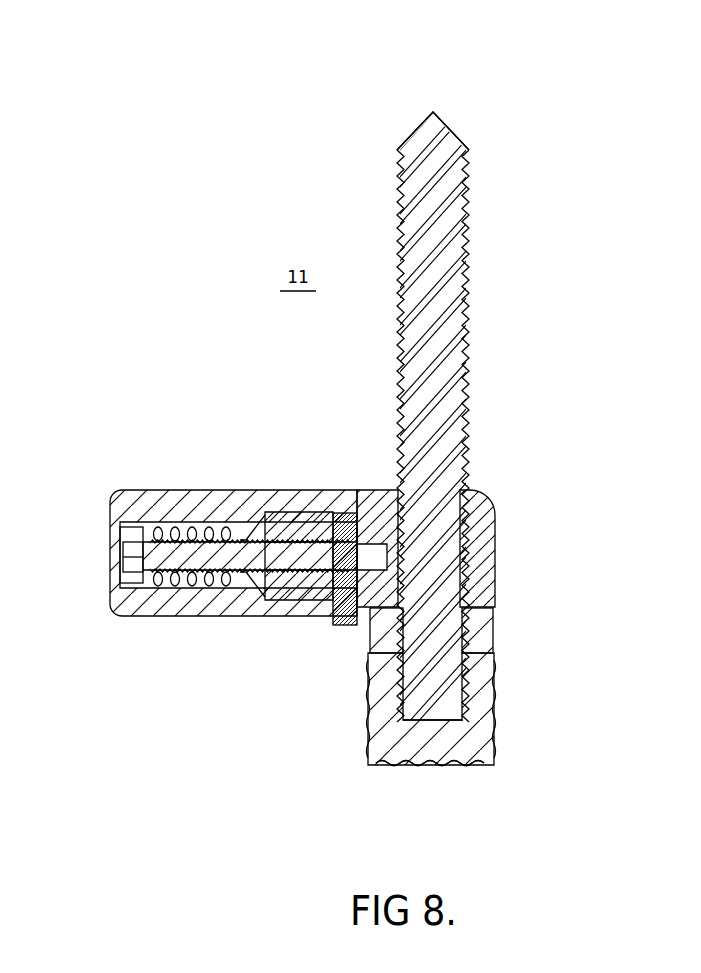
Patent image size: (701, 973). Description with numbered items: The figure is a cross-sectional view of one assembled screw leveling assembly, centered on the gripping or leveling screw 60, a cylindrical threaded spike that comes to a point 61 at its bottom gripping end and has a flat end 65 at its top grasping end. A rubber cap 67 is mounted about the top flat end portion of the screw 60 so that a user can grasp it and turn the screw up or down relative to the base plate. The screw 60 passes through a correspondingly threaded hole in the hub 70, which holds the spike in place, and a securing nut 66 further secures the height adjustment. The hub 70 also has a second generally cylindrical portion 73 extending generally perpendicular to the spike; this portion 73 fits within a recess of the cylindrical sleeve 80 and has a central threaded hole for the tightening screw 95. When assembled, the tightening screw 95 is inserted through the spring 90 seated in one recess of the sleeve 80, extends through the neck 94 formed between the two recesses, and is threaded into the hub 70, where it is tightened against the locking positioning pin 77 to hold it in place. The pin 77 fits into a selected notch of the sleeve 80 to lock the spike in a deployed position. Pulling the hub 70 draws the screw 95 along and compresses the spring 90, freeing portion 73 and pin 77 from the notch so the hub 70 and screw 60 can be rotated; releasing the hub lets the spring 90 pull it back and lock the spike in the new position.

The screw 60 is at (472, 263).
The point 61 is at (433, 112).
The flat end 65 is at (495, 756).
The securing nut 66 is at (495, 632).
The rubber cap 67 is at (495, 695).
The hub 70 is at (497, 525).
The second generally cylindrical portion 73 is at (297, 513).
The locking positioning pin 77 is at (343, 628).
The cylindrical sleeve 80 is at (150, 490).
The spring 90 is at (213, 527).
The neck 94 is at (238, 580).
The tightening screw 95 is at (122, 565).